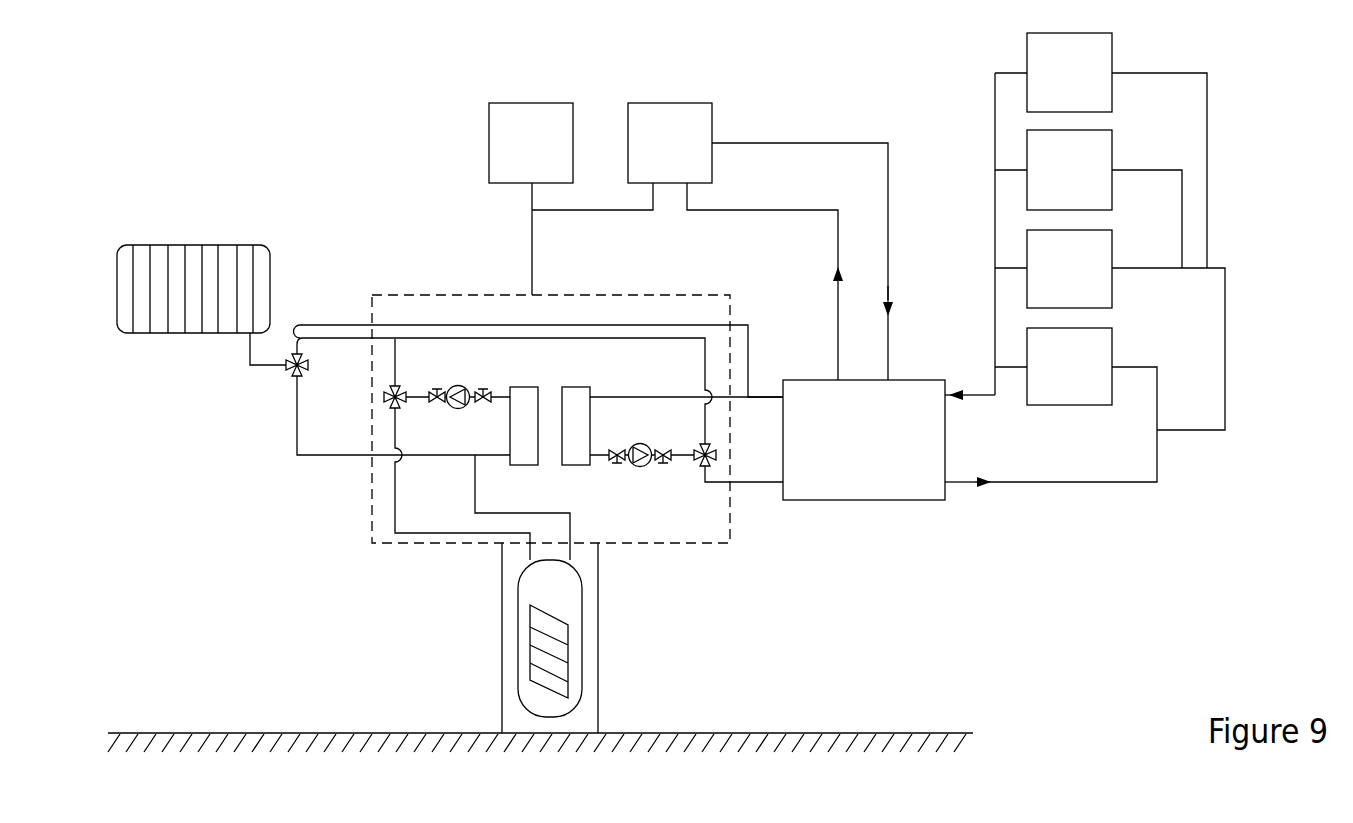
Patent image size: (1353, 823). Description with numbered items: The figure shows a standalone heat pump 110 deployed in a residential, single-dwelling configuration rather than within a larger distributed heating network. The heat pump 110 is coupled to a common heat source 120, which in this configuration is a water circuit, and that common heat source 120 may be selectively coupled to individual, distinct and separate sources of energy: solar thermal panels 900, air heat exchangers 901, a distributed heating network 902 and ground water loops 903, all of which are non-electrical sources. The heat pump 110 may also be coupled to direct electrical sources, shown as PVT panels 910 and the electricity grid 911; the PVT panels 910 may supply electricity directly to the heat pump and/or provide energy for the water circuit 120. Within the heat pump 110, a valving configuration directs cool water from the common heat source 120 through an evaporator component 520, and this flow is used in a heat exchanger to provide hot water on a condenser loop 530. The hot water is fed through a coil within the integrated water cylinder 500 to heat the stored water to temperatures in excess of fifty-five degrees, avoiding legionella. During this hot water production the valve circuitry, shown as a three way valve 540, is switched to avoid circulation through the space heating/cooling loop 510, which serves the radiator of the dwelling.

The heat pump 110 is at (539, 415).
The common heat source 120 is at (802, 380).
The cylinder 500 is at (607, 618).
The space heating/cooling loop 510 is at (356, 255).
The evaporator component 520 is at (672, 494).
The condenser loop 530 is at (436, 500).
The three way valve 540 is at (346, 409).
The solar thermal panels 900 is at (1113, 150).
The air heat exchangers 901 is at (1113, 253).
The distributed heating network 902 is at (1113, 350).
The ground water loops 903 is at (1113, 48).
The PVT panels 910 is at (708, 125).
The electricity grid 911 is at (520, 103).